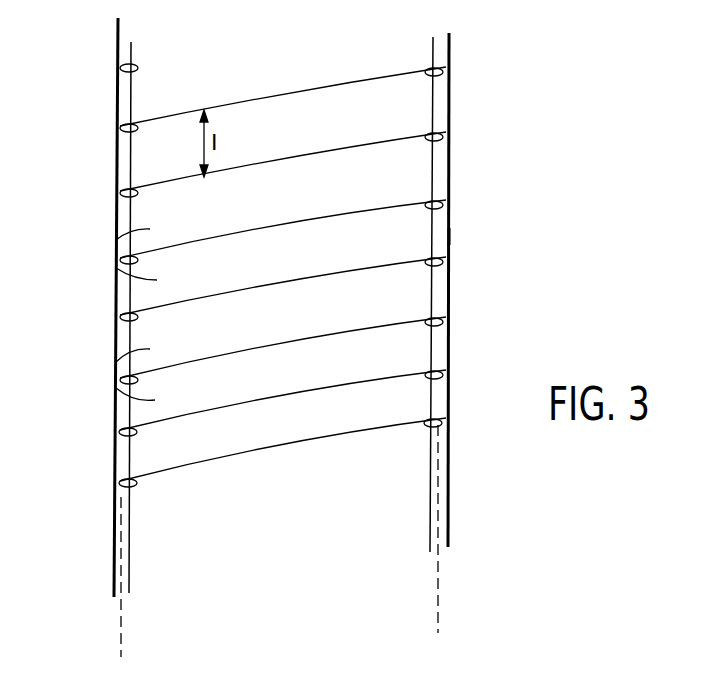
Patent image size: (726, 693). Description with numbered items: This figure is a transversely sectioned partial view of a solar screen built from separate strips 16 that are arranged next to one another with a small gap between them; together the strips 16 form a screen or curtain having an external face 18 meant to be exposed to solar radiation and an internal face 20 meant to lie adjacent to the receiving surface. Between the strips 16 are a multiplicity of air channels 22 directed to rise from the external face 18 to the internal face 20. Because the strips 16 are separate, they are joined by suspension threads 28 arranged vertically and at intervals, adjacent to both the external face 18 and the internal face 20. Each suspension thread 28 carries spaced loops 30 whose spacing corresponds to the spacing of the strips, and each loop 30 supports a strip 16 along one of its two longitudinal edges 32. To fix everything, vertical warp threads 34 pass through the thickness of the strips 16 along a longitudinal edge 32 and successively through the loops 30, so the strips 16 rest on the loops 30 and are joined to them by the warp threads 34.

The strips 16 is at (339, 214).
The external face 18 is at (124, 612).
The internal face 20 is at (436, 594).
The air channels 22 is at (118, 236).
The suspension threads 28 is at (118, 38).
The loops 30 is at (126, 71).
The longitudinal edge 32 is at (450, 240).
The warp threads 34 is at (132, 50).